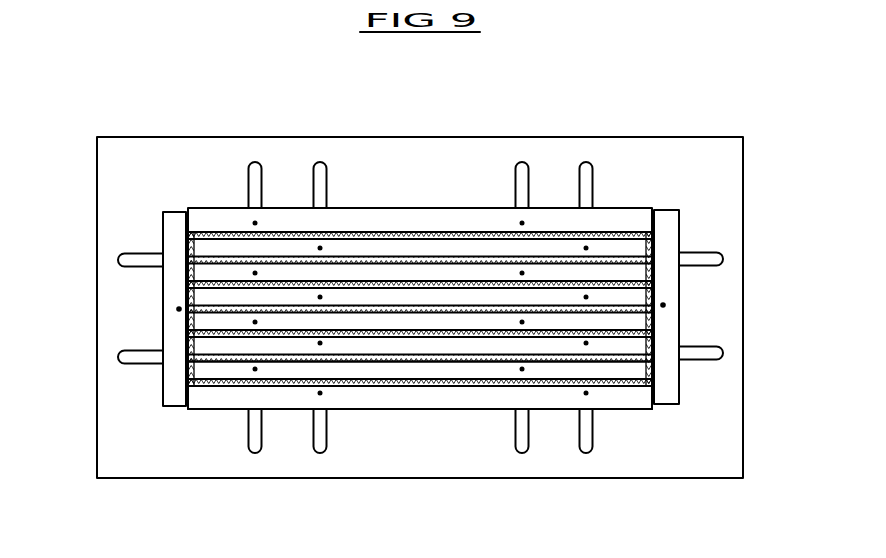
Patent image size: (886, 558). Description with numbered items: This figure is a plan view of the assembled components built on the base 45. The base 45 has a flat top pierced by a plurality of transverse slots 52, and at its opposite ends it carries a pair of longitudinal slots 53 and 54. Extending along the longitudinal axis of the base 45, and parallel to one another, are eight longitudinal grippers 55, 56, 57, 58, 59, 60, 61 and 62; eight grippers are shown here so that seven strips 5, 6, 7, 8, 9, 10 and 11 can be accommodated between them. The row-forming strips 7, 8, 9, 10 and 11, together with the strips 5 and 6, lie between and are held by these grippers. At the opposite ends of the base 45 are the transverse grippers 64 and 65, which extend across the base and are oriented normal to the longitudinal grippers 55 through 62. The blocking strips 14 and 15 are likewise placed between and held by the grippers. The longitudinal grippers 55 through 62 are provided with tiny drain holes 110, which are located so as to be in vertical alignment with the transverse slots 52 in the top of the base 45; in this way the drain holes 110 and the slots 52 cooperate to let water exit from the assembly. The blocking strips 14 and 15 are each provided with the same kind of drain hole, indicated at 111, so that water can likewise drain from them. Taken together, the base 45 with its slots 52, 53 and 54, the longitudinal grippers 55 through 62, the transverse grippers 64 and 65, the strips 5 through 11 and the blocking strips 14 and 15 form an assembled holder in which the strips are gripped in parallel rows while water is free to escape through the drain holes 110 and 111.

The base 45 is at (138, 123).
The transverse slots 52 is at (257, 162).
The longitudinal slot 53 is at (118, 262).
The longitudinal slot 54 is at (723, 261).
The longitudinal gripper 55 is at (200, 212).
The longitudinal gripper 56 is at (227, 245).
The longitudinal gripper 57 is at (345, 273).
The row-forming strip 7 is at (512, 283).
The longitudinal gripper 58 is at (198, 301).
The longitudinal gripper 59 is at (192, 338).
The longitudinal gripper 60 is at (233, 345).
The longitudinal gripper 61 is at (240, 368).
The blocking strip 14 is at (188, 348).
The strip 5 is at (648, 245).
The longitudinal gripper 62 is at (420, 398).
The row-forming strip 11 is at (633, 362).
The row-forming strip 10 is at (618, 368).
The drain holes 110 is at (320, 297).
The row-forming strip 8 is at (641, 320).
The strip 6 is at (603, 248).
The drain hole 111 is at (179, 309).
The transverse gripper 65 is at (163, 237).
The transverse gripper 64 is at (672, 355).
The row-forming strip 9 is at (657, 358).
The blocking strip 15 is at (679, 238).